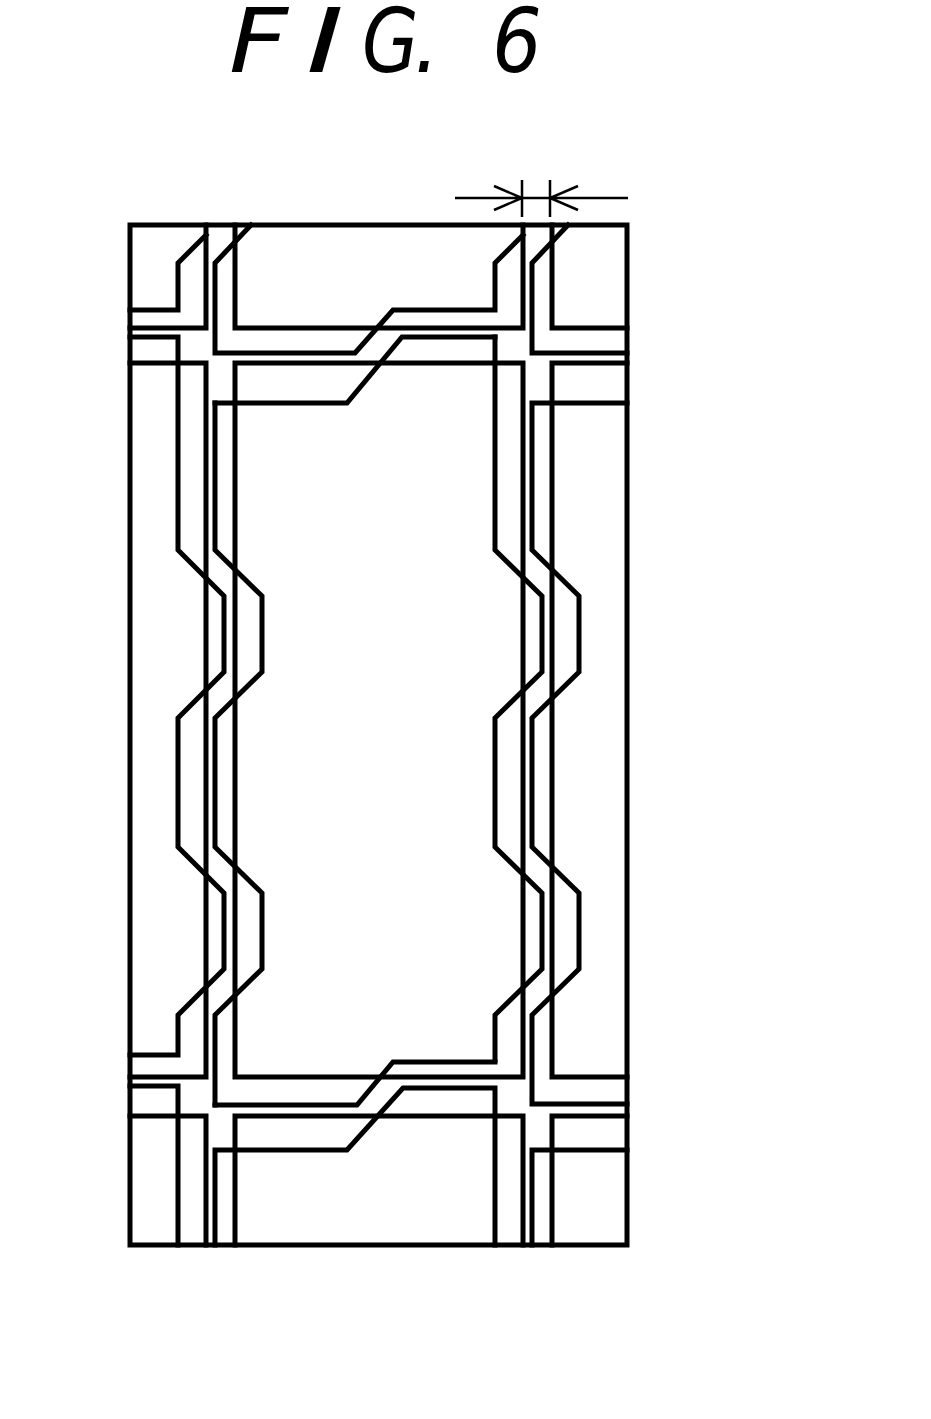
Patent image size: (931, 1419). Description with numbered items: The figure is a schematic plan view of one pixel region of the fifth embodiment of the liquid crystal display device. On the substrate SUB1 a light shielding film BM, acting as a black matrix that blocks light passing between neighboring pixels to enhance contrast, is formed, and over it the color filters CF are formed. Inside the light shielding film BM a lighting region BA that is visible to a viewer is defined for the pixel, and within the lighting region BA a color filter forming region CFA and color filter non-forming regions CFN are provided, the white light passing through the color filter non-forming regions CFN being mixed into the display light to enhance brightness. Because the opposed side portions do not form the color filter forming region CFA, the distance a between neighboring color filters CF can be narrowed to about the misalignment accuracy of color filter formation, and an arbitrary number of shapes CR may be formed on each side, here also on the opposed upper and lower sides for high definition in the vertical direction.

The substrate SUB1 is at (627, 268).
The light shielding film BM is at (555, 811).
The color filter CF is at (497, 1037).
The color filter forming region CFA is at (430, 937).
The color filter non-forming region CFN is at (512, 481).
The lighting region BA is at (526, 747).
The shape CR is at (363, 383).
The distance between neighboring color filters a is at (541, 176).